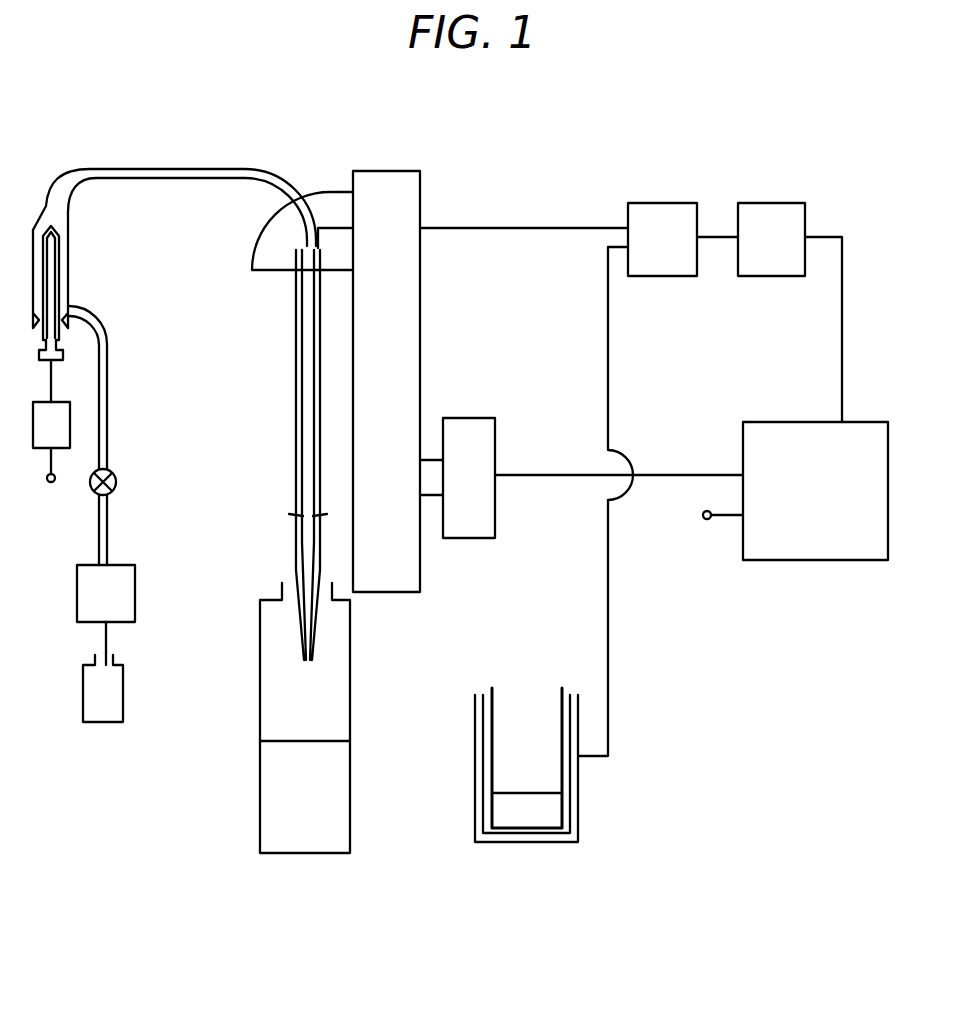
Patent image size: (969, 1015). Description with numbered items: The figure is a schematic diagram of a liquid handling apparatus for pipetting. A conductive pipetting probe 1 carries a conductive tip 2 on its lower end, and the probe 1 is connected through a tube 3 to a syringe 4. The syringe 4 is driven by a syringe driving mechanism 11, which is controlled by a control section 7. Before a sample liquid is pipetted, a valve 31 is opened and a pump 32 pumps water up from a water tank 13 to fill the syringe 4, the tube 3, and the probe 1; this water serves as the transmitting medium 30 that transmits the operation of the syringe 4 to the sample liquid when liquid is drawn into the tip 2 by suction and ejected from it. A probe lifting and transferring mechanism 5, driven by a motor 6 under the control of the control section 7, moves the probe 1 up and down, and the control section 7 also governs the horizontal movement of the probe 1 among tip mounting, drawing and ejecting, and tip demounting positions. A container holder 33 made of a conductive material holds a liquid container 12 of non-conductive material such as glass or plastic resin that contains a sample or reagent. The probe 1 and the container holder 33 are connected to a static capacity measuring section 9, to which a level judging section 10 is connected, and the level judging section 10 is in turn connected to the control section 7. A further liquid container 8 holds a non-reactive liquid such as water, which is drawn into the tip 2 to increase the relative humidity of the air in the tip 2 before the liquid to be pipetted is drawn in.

The conductive pipetting probe 1 is at (296, 420).
The conductive tip 2 is at (295, 562).
The tube 3 is at (174, 183).
The syringe 4 is at (70, 268).
The probe lifting and transferring mechanism 5 is at (388, 172).
The motor 6 is at (466, 423).
The control section 7 is at (760, 425).
The liquid container 8 is at (258, 598).
The static capacity measuring section 9 is at (660, 207).
The level judging section 10 is at (770, 207).
The syringe driving mechanism 11 is at (62, 402).
The liquid container 12 is at (490, 690).
The water tank 13 is at (124, 695).
The transmitting medium 30 is at (216, 181).
The valve 31 is at (118, 478).
The pump 32 is at (136, 568).
The container holder 33 is at (574, 812).